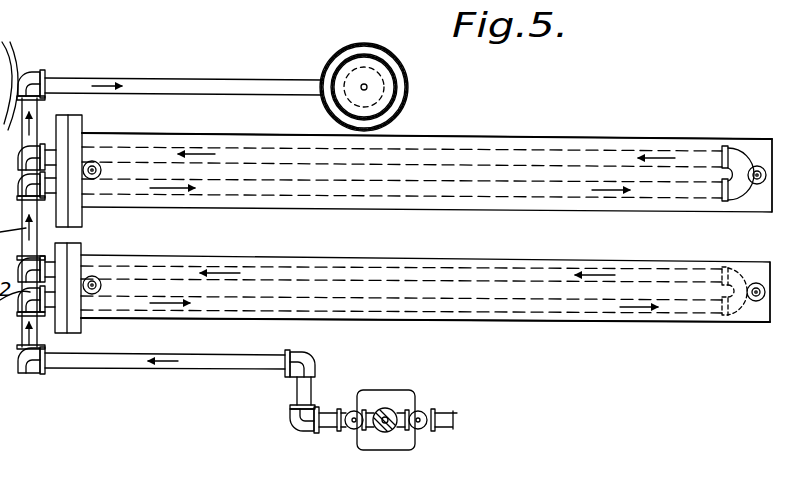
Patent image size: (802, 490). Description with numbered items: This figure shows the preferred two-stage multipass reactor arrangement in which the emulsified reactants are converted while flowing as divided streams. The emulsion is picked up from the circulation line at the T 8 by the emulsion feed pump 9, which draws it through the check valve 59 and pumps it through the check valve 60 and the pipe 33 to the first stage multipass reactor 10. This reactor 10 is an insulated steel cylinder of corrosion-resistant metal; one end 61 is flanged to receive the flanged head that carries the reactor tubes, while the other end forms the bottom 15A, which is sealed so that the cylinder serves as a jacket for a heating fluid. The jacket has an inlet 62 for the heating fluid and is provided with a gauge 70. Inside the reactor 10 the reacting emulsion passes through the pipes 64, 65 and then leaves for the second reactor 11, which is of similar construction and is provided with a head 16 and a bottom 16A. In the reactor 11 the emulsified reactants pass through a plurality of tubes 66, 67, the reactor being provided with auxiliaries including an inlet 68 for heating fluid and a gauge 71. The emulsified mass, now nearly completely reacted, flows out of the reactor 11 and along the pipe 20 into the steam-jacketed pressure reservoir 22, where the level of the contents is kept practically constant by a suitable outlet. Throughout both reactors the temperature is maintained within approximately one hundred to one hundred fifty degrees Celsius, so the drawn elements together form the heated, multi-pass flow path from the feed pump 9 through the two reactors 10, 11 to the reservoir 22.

The pipe 20 is at (147, 77).
The steam-jacketed pressure reservoir 22 is at (408, 70).
The reactor 11 is at (600, 137).
The gauge 71 is at (757, 165).
The head 16 is at (68, 158).
The inlet 68 is at (100, 165).
The tube 67 is at (250, 153).
The tube 66 is at (283, 187).
The bottom 16A is at (772, 190).
The flanged end 61 is at (72, 243).
The inlet 62 is at (98, 279).
The pipe 65 is at (187, 270).
The pipe 64 is at (195, 305).
The multipass reactor 10 is at (600, 322).
The gauge 70 is at (757, 301).
The bottom 15A is at (770, 318).
The pipe 33 is at (100, 363).
The emulsion feed pump 9 is at (386, 398).
The T 8 is at (452, 419).
The check valve 60 is at (356, 431).
The check valve 59 is at (420, 431).